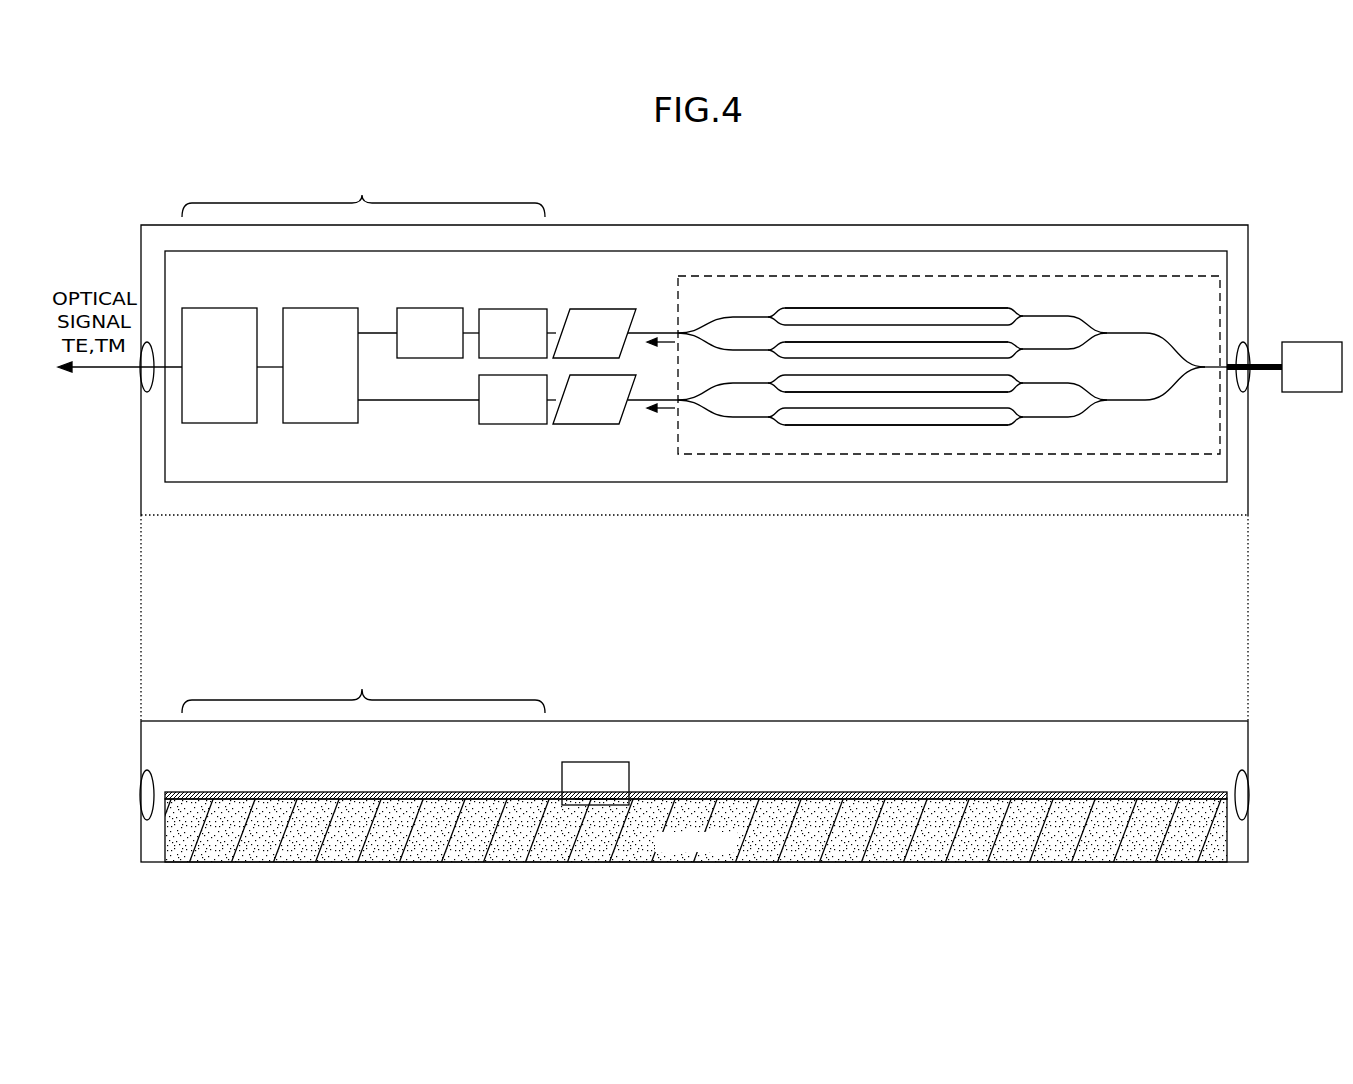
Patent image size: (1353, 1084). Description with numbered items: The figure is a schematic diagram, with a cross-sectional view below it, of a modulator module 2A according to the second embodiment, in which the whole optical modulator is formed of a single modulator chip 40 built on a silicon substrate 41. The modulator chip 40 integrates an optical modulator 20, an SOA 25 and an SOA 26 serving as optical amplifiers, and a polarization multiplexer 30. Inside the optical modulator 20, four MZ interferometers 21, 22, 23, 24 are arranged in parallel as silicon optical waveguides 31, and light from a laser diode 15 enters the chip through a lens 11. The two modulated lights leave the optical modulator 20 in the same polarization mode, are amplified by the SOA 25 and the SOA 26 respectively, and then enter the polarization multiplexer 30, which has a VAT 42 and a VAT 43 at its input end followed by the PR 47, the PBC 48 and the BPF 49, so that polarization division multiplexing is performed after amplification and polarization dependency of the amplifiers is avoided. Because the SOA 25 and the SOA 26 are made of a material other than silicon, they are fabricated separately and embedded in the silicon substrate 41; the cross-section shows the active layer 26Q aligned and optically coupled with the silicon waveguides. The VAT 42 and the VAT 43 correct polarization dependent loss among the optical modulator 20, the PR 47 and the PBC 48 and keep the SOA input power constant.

The modulator module 2A is at (1151, 225).
The lens 11 is at (1250, 382).
The laser diode (LD) 15 is at (1313, 342).
The optical modulator 20 is at (1134, 276).
The MZ interferometer 21 is at (878, 301).
The MZ interferometer 22 is at (937, 330).
The MZ interferometer 23 is at (866, 403).
The MZ interferometer 24 is at (946, 433).
The SOA 25 is at (595, 309).
The SOA 26 is at (596, 424).
The active layer 26Q is at (598, 805).
The polarization multiplexer 30 is at (363, 442).
The optical waveguides 31 is at (1213, 360).
The modulator chip 40 is at (1084, 251).
The silicon substrate 41 is at (1215, 830).
The variable attenuator 42 is at (515, 309).
The variable attenuator 43 is at (513, 424).
The PR 47 is at (432, 308).
The PBC 48 is at (322, 308).
The BPF 49 is at (222, 308).